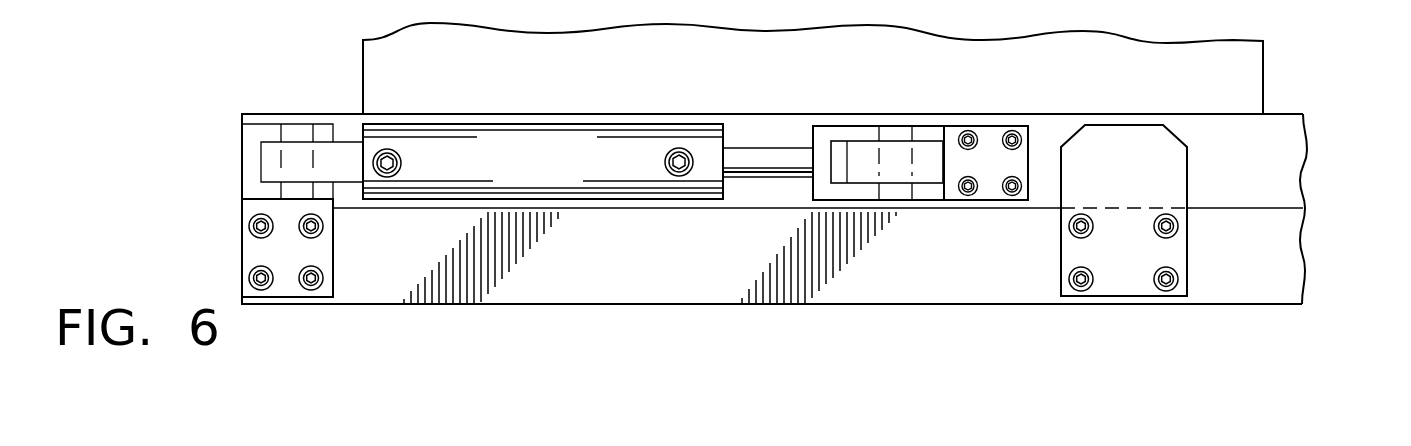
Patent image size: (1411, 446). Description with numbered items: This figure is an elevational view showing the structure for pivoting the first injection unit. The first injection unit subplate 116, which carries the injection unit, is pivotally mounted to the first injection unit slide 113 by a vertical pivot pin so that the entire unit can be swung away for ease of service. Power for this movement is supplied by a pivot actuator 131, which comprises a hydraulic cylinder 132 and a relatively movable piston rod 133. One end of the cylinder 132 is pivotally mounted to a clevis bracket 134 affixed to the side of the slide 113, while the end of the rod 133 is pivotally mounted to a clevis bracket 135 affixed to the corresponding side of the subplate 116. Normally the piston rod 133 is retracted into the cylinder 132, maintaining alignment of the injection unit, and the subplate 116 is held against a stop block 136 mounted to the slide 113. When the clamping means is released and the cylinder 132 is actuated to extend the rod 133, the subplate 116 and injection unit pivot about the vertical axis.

The first injection unit slide 113 is at (1304, 243).
The first injection unit subplate 116 is at (1304, 178).
The pivot actuator 131 is at (573, 118).
The hydraulic cylinder 132 is at (577, 200).
The piston rod 133 is at (768, 178).
The clevis bracket 134 is at (334, 248).
The clevis bracket 135 is at (926, 170).
The stop block 136 is at (1188, 177).